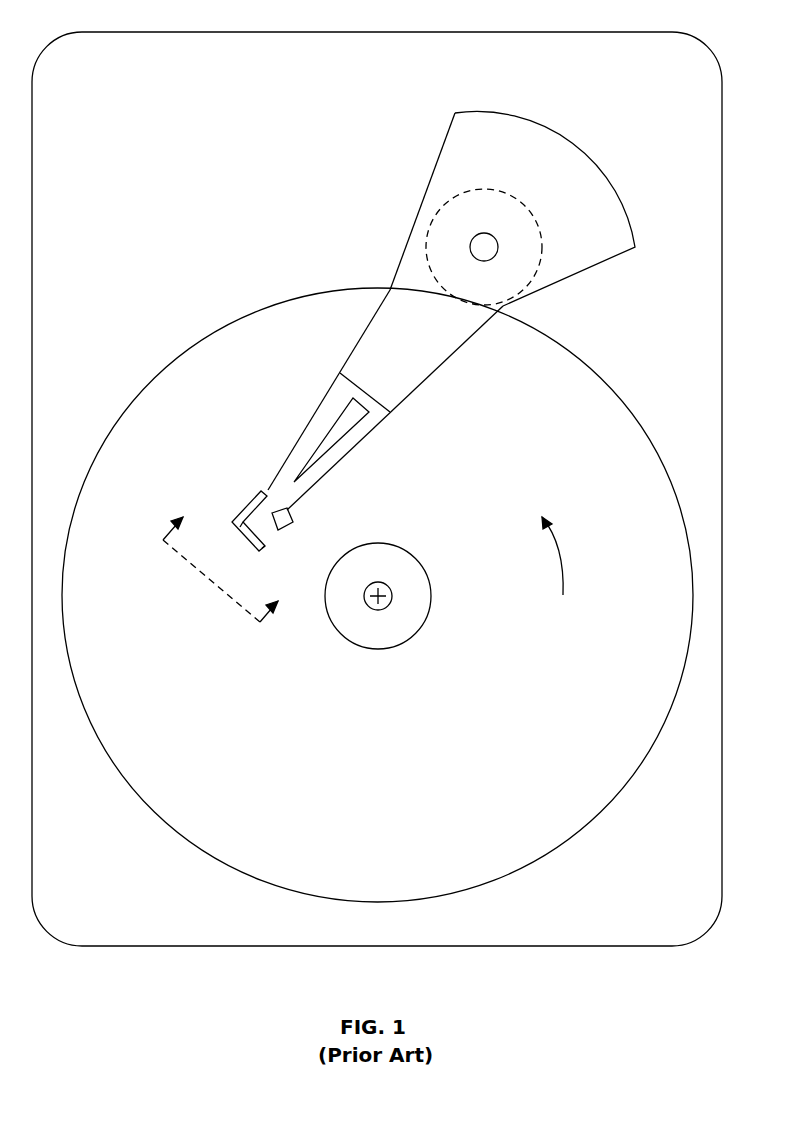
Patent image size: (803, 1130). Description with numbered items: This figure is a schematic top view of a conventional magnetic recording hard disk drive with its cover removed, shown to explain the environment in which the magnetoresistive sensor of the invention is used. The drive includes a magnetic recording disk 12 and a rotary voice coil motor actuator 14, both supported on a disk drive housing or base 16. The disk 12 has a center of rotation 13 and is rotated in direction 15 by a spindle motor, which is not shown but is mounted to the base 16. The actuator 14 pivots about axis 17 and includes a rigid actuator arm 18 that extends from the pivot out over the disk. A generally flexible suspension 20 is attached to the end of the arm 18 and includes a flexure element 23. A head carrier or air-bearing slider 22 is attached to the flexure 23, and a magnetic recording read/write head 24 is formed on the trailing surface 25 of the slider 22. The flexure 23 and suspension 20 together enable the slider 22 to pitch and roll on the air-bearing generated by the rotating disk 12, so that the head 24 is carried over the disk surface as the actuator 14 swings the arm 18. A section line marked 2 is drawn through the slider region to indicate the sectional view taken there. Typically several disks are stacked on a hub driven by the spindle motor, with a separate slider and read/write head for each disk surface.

The magnetic recording disk 12 is at (390, 819).
The center of rotation 13 is at (392, 588).
The rotary voice coil motor actuator 14 is at (576, 135).
The direction of rotation 15 is at (562, 567).
The disk drive housing or base 16 is at (613, 32).
The pivot axis 17 is at (478, 246).
The rigid actuator arm 18 is at (378, 330).
The suspension 20 is at (334, 403).
The air-bearing slider 22 is at (260, 500).
The flexure element 23 is at (279, 527).
The magnetic recording read/write head 24 is at (263, 546).
The trailing surface 25 is at (240, 528).
The section line 2- 2 is at (227, 560).